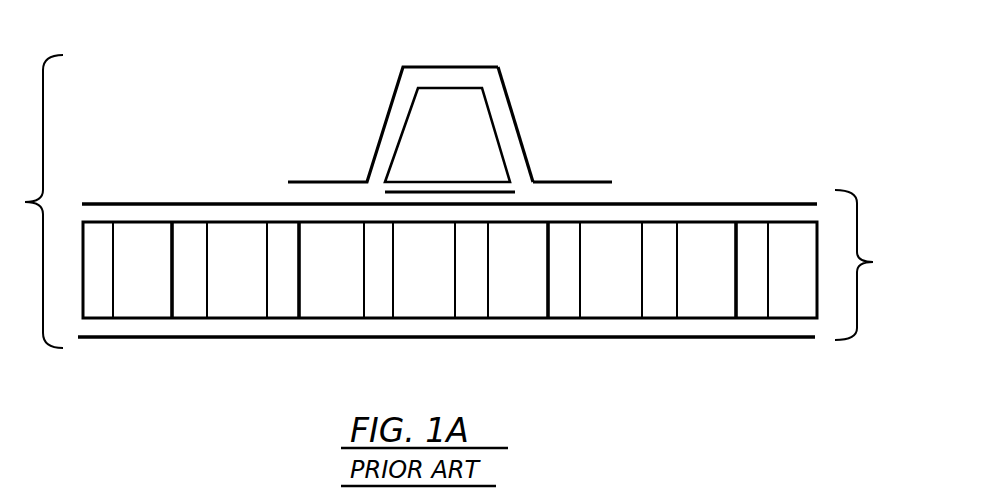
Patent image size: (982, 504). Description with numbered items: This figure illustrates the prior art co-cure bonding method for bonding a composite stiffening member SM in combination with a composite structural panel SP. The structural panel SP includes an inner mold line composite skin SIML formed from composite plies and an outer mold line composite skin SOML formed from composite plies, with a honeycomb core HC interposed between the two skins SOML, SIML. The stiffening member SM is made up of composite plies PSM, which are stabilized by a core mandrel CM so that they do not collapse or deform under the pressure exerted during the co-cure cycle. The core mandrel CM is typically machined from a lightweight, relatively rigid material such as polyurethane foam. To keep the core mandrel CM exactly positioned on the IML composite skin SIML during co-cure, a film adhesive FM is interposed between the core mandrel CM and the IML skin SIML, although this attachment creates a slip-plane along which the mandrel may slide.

The composite stiffening member SM is at (530, 55).
The composite plies PSM is at (532, 136).
The core mandrel CM is at (447, 78).
The film adhesive FM is at (412, 191).
The inner mold line composite skin SIML is at (205, 192).
The outer mold line composite skin SOML is at (214, 348).
The honeycomb core HC is at (628, 296).
The composite structural panel SP is at (874, 265).